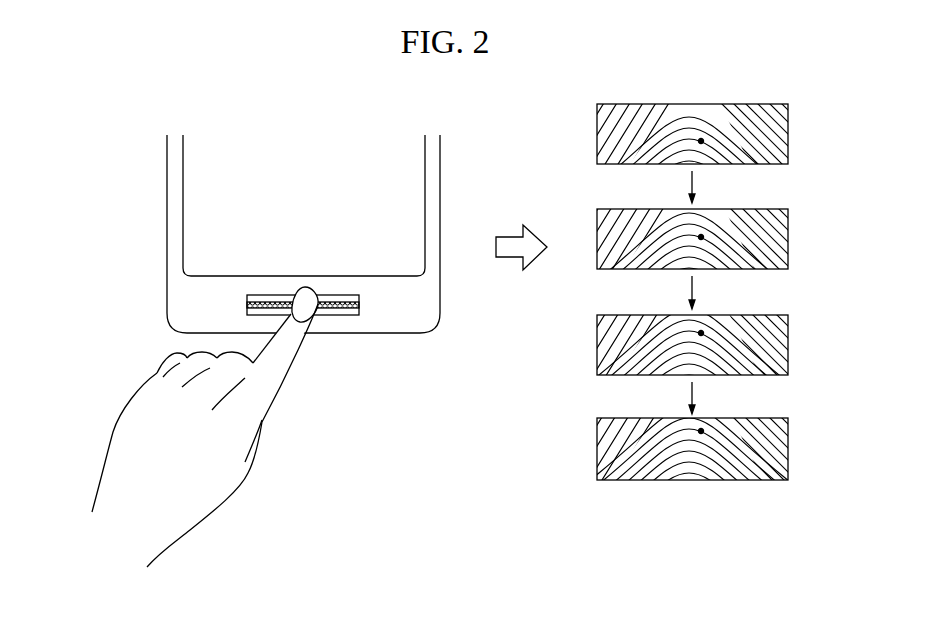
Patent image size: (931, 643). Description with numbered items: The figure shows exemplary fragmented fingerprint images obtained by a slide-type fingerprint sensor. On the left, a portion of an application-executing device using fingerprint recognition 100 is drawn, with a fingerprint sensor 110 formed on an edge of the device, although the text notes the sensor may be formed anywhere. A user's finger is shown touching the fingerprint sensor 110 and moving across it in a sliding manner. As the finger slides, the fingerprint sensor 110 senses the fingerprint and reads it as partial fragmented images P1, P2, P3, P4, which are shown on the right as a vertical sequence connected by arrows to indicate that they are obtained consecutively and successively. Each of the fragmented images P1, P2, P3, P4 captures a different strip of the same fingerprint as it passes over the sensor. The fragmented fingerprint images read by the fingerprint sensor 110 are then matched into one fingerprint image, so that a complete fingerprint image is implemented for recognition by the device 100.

The application-executing device using fingerprint recognition 100 is at (158, 220).
The fingerprint sensor 110 is at (347, 315).
The partial fragmented image P1 is at (717, 183).
The partial fragmented image P2 is at (717, 279).
The partial fragmented image P3 is at (717, 375).
The partial fragmented image P4 is at (717, 473).